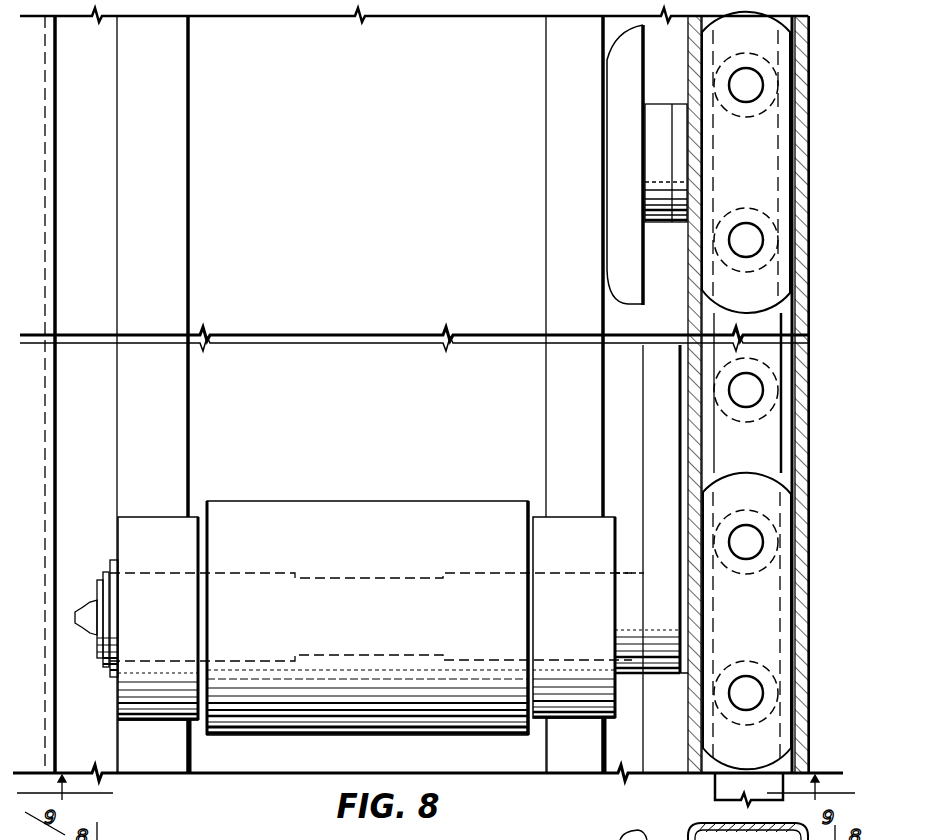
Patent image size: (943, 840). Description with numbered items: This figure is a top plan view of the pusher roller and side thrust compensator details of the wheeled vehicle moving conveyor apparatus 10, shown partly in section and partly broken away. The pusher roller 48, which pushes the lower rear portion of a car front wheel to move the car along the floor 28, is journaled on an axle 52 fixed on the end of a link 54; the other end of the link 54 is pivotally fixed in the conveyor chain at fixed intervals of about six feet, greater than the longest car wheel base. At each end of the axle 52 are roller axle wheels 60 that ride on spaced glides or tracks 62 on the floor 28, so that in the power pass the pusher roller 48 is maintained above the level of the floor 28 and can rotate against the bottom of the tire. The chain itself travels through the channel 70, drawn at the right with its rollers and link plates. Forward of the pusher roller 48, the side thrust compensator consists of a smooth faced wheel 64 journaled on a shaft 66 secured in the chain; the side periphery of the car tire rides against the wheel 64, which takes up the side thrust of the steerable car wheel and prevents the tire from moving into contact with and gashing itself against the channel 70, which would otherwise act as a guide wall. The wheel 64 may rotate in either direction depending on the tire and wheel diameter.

The wheeled vehicle moving conveyor apparatus 10 is at (818, 505).
The floor 28 is at (345, 215).
The pusher roller 48 is at (400, 518).
The axle 52 is at (97, 645).
The link 54 is at (655, 432).
The roller axle wheels 60 is at (138, 562).
The glides or tracks 62 is at (563, 238).
The side thrust compensator wheel 64 is at (625, 173).
The shaft 66 is at (681, 225).
The channel 70 is at (692, 709).